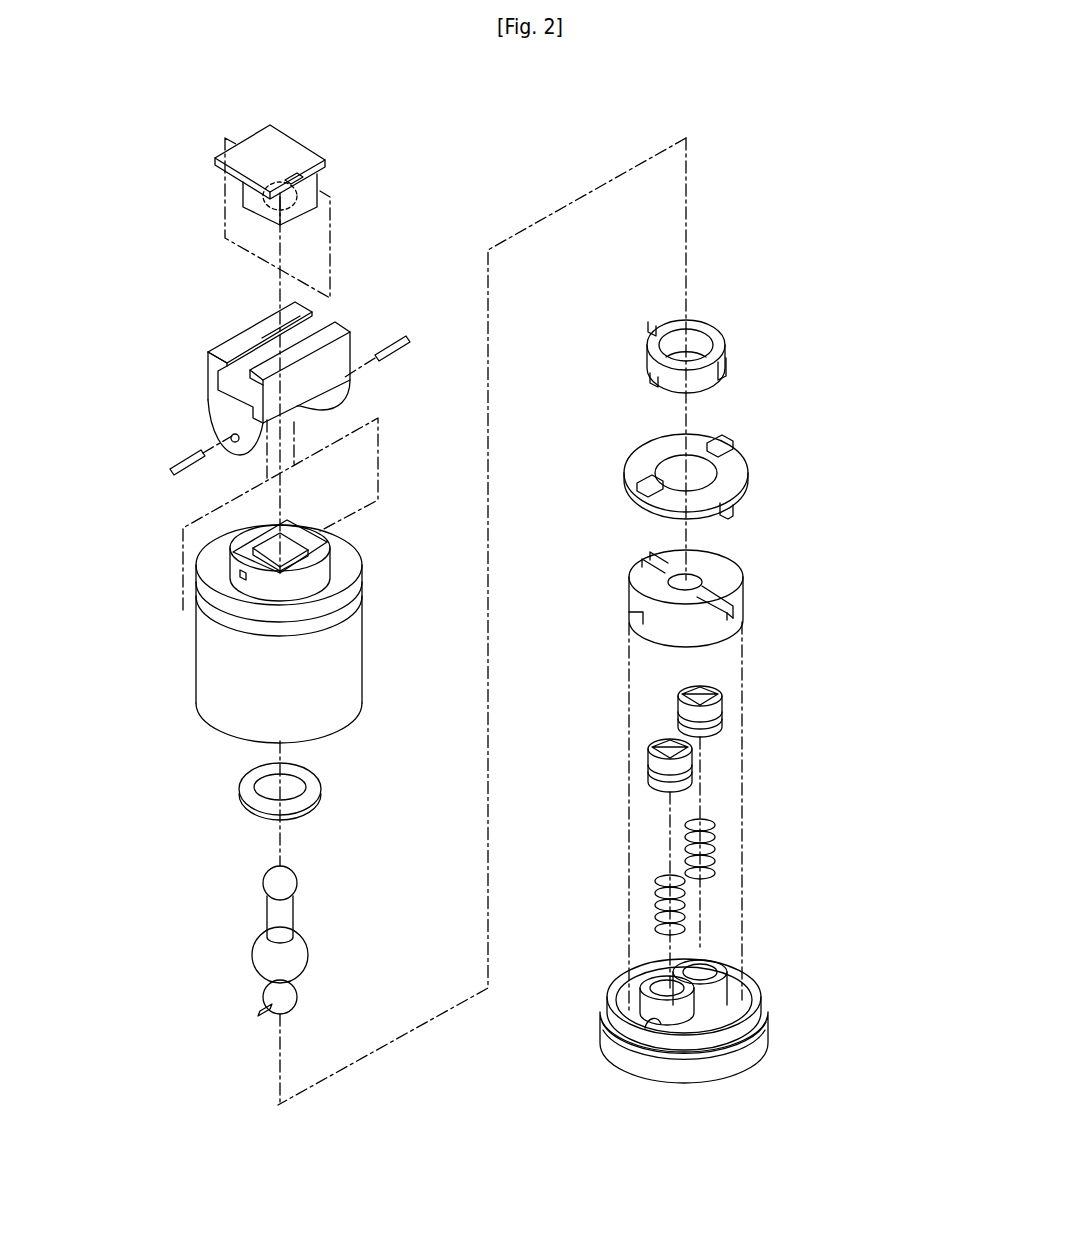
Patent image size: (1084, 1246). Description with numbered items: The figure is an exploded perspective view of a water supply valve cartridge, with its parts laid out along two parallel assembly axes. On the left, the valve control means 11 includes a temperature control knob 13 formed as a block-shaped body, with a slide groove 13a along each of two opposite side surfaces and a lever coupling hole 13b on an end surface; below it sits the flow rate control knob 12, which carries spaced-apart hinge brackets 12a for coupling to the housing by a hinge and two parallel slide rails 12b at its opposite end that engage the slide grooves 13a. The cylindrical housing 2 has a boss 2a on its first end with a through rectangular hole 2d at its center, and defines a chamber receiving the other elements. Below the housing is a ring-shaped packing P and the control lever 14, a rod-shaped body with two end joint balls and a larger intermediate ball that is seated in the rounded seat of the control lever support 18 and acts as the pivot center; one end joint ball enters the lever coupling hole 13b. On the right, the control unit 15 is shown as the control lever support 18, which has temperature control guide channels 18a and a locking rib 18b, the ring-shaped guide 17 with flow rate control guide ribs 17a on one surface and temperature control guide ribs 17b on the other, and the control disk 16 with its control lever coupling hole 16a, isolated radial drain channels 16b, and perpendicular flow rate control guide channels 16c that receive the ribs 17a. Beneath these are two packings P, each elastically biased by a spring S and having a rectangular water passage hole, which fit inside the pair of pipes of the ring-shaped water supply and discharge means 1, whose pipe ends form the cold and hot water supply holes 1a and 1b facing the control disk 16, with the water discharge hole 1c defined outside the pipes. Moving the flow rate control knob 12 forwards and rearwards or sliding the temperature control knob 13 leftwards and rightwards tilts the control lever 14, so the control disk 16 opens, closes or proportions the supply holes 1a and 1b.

The water supply and discharge means 1 is at (747, 1063).
The cold water supply hole 1a is at (710, 972).
The hot water supply hole 1b is at (660, 987).
The water discharge hole 1c is at (667, 1023).
The housing 2 is at (343, 680).
The boss 2a is at (313, 570).
The through rectangular hole 2d is at (253, 545).
The valve control means 11 is at (430, 248).
The flow rate control knob 12 is at (317, 387).
The hinge brackets 12a is at (228, 420).
The slide rails 12b is at (255, 340).
The temperature control knob 13 is at (258, 150).
The slide groove 13a is at (318, 183).
The lever coupling hole 13b is at (262, 218).
The control lever 14 is at (277, 920).
The control unit 15 is at (540, 456).
The control disk 16 is at (645, 590).
The control lever coupling hole 16a is at (692, 580).
The drain channels 16b is at (633, 623).
The flow rate control guide channels 16c is at (733, 610).
The guide 17 is at (627, 470).
The flow rate control guide ribs 17a is at (733, 512).
The temperature control guide ribs 17b is at (713, 440).
The control lever support 18 is at (717, 323).
The temperature control guide channels 18a is at (660, 385).
The locking rib 18b is at (733, 373).
The packing P is at (300, 805).
The spring S is at (687, 907).